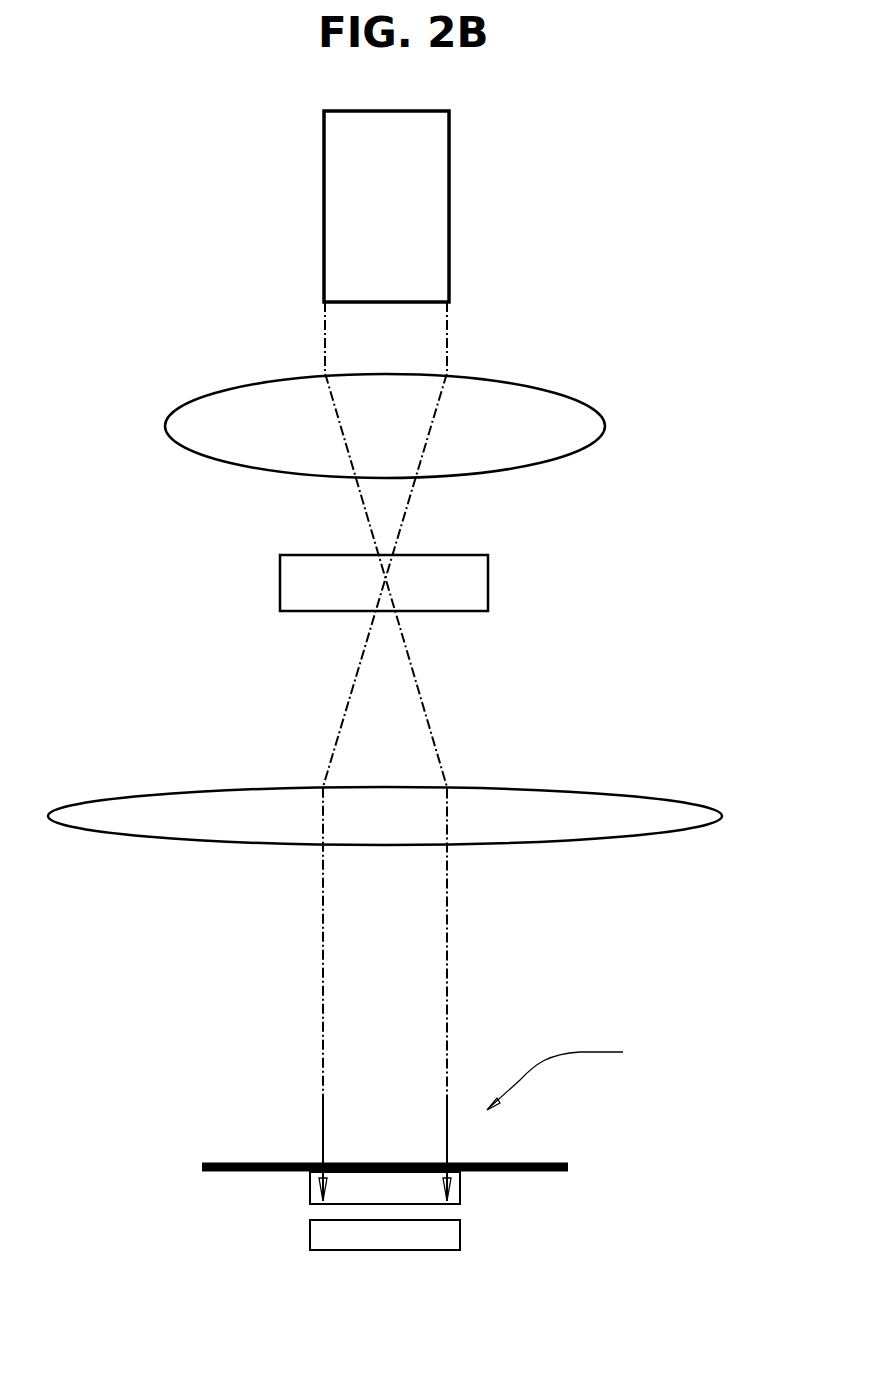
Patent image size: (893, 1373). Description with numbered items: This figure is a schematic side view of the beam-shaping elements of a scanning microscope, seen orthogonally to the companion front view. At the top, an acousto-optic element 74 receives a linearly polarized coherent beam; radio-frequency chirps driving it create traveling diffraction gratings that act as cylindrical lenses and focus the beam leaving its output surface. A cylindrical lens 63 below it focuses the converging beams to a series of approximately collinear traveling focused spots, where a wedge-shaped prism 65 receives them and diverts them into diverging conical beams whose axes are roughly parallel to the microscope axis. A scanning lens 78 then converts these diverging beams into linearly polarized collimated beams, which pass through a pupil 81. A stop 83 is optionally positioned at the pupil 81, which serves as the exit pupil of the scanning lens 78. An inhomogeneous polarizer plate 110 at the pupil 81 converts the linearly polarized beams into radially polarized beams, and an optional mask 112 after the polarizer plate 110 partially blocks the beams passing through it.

The acousto-optic element 74 is at (450, 220).
The cylindrical lens 63 is at (600, 440).
The wedge-shaped prism 65 is at (490, 582).
The scanning lens 78 is at (585, 790).
The pupil 81 is at (573, 1074).
The stop 83 is at (538, 1162).
The inhomogeneous polarizer plate 110 is at (460, 1188).
The mask 112 is at (460, 1238).